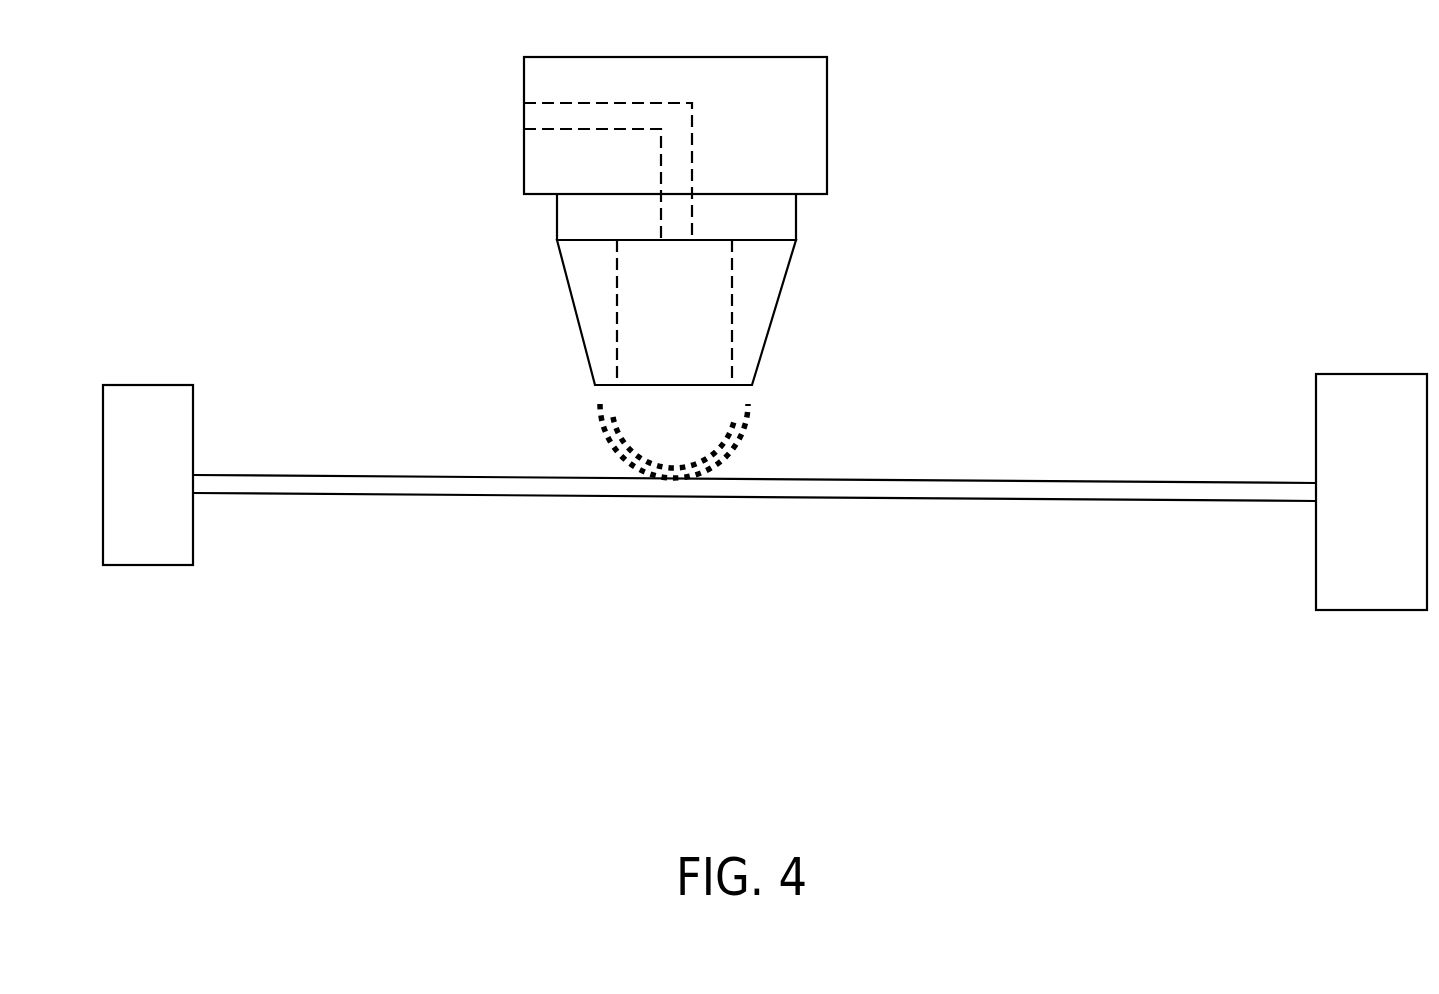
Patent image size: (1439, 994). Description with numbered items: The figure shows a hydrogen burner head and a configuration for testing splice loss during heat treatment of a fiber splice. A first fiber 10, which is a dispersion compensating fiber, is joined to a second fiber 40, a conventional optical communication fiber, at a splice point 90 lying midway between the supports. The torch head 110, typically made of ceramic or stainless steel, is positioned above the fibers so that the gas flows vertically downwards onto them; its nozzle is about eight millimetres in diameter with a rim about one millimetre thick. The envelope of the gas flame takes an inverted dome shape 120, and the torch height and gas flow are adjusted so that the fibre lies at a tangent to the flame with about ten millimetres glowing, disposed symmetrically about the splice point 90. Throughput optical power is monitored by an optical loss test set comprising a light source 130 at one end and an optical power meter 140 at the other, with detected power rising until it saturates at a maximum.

The first fiber 10 is at (907, 499).
The second fiber 40 is at (538, 495).
The splice point 90 is at (668, 477).
The torch head 110 is at (784, 83).
The inverted dome shape 120 is at (783, 386).
The light source 130 is at (155, 547).
The optical power meter 140 is at (1372, 538).